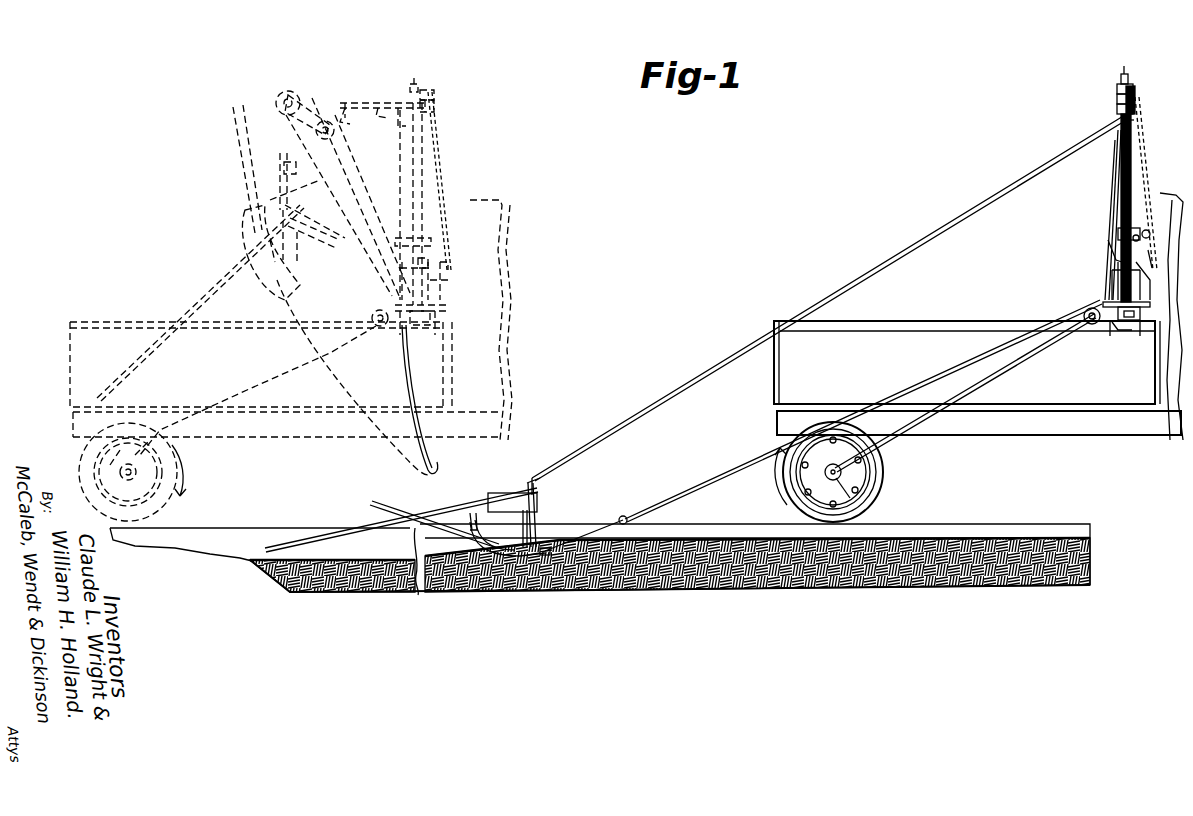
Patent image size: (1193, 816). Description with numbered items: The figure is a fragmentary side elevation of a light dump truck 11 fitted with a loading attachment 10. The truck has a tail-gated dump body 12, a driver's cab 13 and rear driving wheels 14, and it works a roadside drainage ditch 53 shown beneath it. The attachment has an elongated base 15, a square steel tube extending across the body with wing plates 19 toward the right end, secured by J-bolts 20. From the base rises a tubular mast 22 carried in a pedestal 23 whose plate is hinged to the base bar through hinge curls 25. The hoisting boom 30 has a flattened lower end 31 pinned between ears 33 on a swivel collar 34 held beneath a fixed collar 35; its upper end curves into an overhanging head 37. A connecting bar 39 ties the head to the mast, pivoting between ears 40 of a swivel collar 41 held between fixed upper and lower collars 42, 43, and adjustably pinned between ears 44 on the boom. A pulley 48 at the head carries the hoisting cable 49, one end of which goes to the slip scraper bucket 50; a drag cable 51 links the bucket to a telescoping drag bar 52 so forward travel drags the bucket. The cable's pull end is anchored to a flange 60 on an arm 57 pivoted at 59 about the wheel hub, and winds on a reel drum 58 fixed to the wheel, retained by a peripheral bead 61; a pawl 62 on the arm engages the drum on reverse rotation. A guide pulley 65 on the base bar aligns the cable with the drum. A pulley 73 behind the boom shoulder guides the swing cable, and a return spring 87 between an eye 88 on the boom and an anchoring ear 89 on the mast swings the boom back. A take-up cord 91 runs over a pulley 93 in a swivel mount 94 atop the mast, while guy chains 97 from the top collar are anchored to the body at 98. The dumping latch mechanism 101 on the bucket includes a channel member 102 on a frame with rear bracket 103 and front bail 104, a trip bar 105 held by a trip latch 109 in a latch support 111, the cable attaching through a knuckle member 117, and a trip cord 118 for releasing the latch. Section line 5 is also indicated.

The section line 5 is at (1093, 275).
The loading attachment 10 is at (363, 99).
The dump truck 11 is at (296, 438).
The dump body 12 is at (163, 322).
The driver's cab 13 is at (505, 200).
The rear driving wheel 14 is at (170, 511).
The base 15 is at (1141, 311).
The wing plates 19 is at (1136, 318).
The J-bolts 20 is at (1110, 334).
The mast 22 is at (412, 150).
The pedestal 23 is at (446, 285).
The hinge curls 25 is at (448, 305).
The hoisting boom 30 is at (370, 186).
The flattened lower end 31 is at (408, 272).
The ears 33 is at (1115, 280).
The swivel collar 34 is at (431, 263).
The fixed collar 35 is at (1110, 250).
The overhanging head 37 is at (330, 108).
The connecting bar 39 is at (384, 116).
The ears 40 is at (396, 121).
The swivel collar 41 is at (1117, 100).
The upper collar 42 is at (1117, 88).
The lower collar 43 is at (434, 110).
The ears 44 is at (354, 118).
The pulley 48 is at (290, 92).
The hoisting cable 49 is at (262, 375).
The slip scraper bucket 50 is at (245, 236).
The drag cable 51 is at (442, 467).
The drag bar 52 is at (1122, 333).
The roadside drainage ditch 53 is at (272, 575).
The arm 57 is at (150, 458).
The reel drum 58 is at (104, 470).
The arm pivot 59 is at (832, 472).
The flange 60 is at (840, 440).
The peripheral bead 61 is at (860, 498).
The pawl 62 is at (906, 458).
The pulley 65 is at (1084, 313).
The pulley 73 is at (328, 137).
The return spring 87 is at (403, 238).
The eye 88 is at (1150, 234).
The anchoring ear 89 is at (1138, 227).
The slack take-up cord 91 is at (400, 96).
The pulley 93 is at (416, 78).
The swivel mount 94 is at (420, 86).
The guy chains 97 is at (446, 160).
The guy chain anchorage 98 is at (450, 266).
The dumping latch mechanism 101 is at (290, 185).
The channel-shaped member 102 is at (308, 255).
The rear bracket 103 is at (282, 200).
The front bail 104 is at (288, 265).
The trip bar 105 is at (410, 334).
The trip latch 109 is at (326, 242).
The latch support 111 is at (318, 248).
The knuckle member 117 is at (283, 160).
The trip cord 118 is at (148, 384).